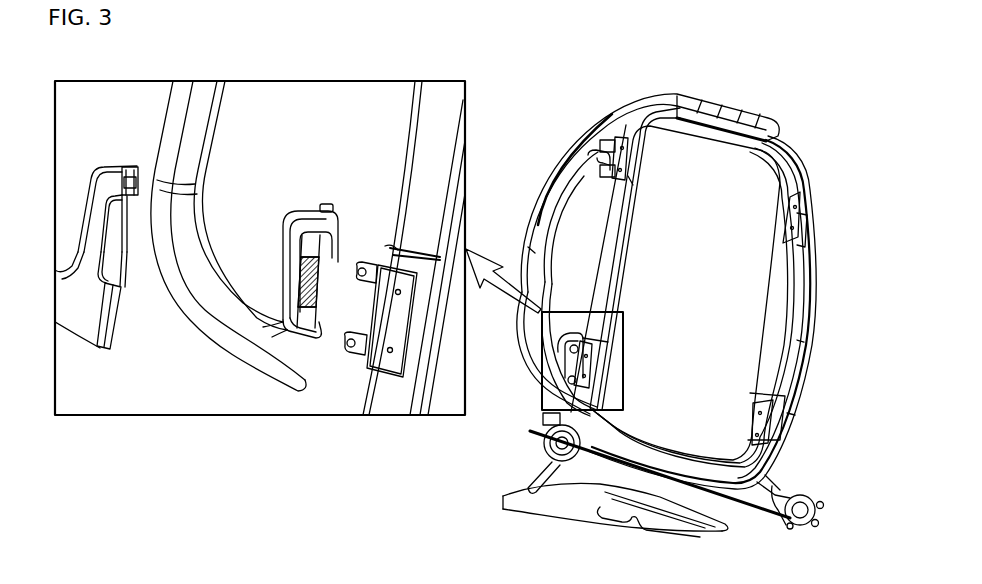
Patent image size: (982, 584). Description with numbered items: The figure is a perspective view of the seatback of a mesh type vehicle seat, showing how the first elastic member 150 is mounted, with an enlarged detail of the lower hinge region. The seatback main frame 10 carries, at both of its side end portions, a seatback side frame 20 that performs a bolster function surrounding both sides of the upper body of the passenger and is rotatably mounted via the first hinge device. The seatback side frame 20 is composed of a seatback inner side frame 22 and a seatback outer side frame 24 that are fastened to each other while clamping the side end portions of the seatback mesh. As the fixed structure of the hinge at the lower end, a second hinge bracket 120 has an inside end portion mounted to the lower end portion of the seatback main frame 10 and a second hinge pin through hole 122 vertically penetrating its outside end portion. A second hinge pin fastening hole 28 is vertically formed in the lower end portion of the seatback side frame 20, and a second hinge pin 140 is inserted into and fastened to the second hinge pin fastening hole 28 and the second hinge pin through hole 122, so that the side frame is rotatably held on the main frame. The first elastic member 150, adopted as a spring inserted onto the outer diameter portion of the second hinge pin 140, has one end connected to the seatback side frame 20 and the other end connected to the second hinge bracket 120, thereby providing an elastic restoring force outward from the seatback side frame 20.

The seatback main frame 10 is at (393, 397).
The seatback side frame 20 is at (180, 244).
The seatback inner side frame 22 is at (228, 318).
The seatback outer side frame 24 is at (110, 322).
The second hinge pin fastening hole 28 is at (131, 181).
The second hinge bracket 120 is at (422, 284).
The second hinge pin through hole 122 is at (374, 258).
The second hinge pin 140 is at (334, 228).
The first elastic member 150 is at (323, 262).